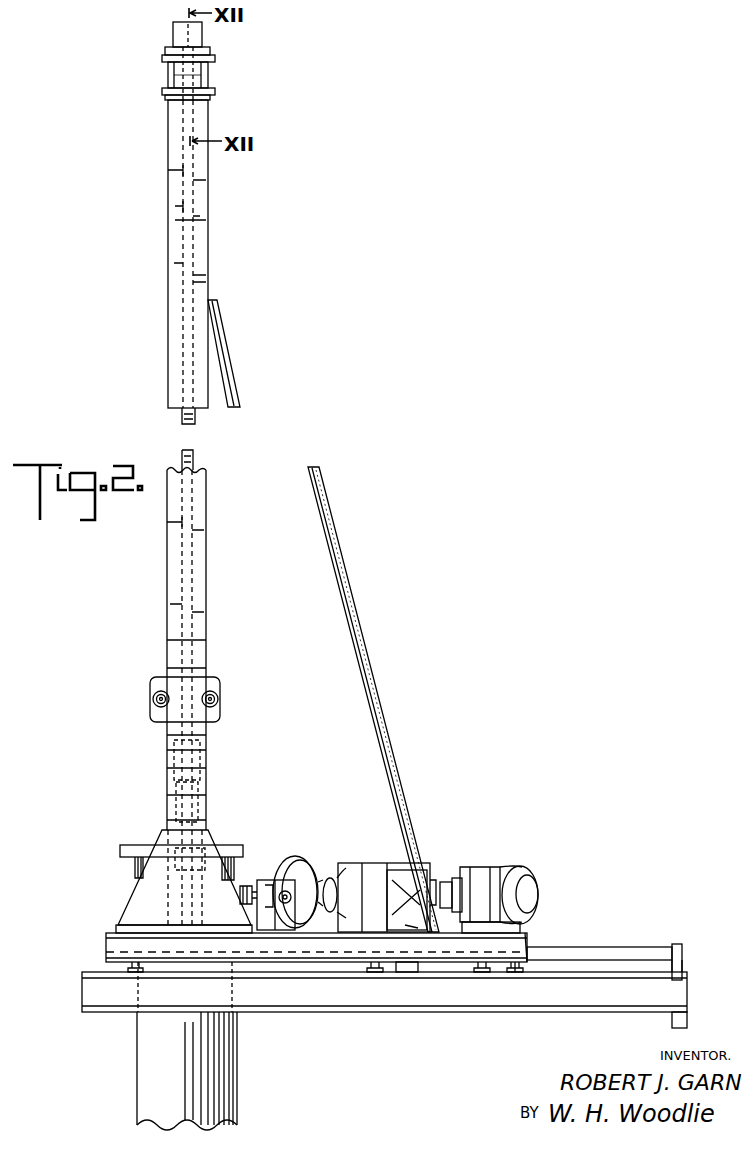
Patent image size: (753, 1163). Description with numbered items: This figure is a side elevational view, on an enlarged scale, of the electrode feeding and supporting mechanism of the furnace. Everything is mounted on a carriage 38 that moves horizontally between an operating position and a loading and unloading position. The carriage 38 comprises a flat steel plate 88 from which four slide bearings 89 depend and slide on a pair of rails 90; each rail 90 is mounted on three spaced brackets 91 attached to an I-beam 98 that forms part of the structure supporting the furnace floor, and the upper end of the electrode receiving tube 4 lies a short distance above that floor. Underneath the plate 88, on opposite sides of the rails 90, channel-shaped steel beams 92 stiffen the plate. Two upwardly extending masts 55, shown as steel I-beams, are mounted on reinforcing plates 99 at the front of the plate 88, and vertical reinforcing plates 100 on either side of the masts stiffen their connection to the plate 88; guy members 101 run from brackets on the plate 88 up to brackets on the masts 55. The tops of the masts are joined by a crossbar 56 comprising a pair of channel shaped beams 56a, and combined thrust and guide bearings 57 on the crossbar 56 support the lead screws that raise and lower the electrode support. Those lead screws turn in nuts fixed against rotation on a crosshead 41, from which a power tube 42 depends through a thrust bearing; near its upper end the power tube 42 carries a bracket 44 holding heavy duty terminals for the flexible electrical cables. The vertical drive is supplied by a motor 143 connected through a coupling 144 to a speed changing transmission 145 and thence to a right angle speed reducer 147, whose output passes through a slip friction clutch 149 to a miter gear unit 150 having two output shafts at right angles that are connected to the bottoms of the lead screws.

The thrust bearing 57 is at (203, 30).
The crossbar 56 is at (152, 70).
The channel shaped beam 56a is at (210, 70).
The mast 55 is at (167, 565).
The crosshead 41 is at (220, 684).
The bracket 44 is at (196, 776).
The power tube 42 is at (196, 806).
The vertical reinforcing plate 100 is at (148, 915).
The reinforcing plate 99 is at (116, 928).
The miter gear unit 150 is at (274, 880).
The slip friction clutch 149 is at (296, 858).
The right angle speed reducer 147 is at (374, 863).
The speed changing transmission 145 is at (436, 875).
The guy member 101 is at (355, 615).
The coupling 144 is at (458, 878).
The motor 143 is at (494, 874).
The carriage 38 is at (513, 836).
The flat steel plate 88 is at (530, 936).
The slide bearing 89 is at (530, 950).
The rail 90 is at (614, 951).
The bracket 91 is at (125, 970).
The steel beam 92 is at (453, 962).
The I-beam 98 is at (330, 1000).
The electrode receiving tube 4 is at (220, 1052).